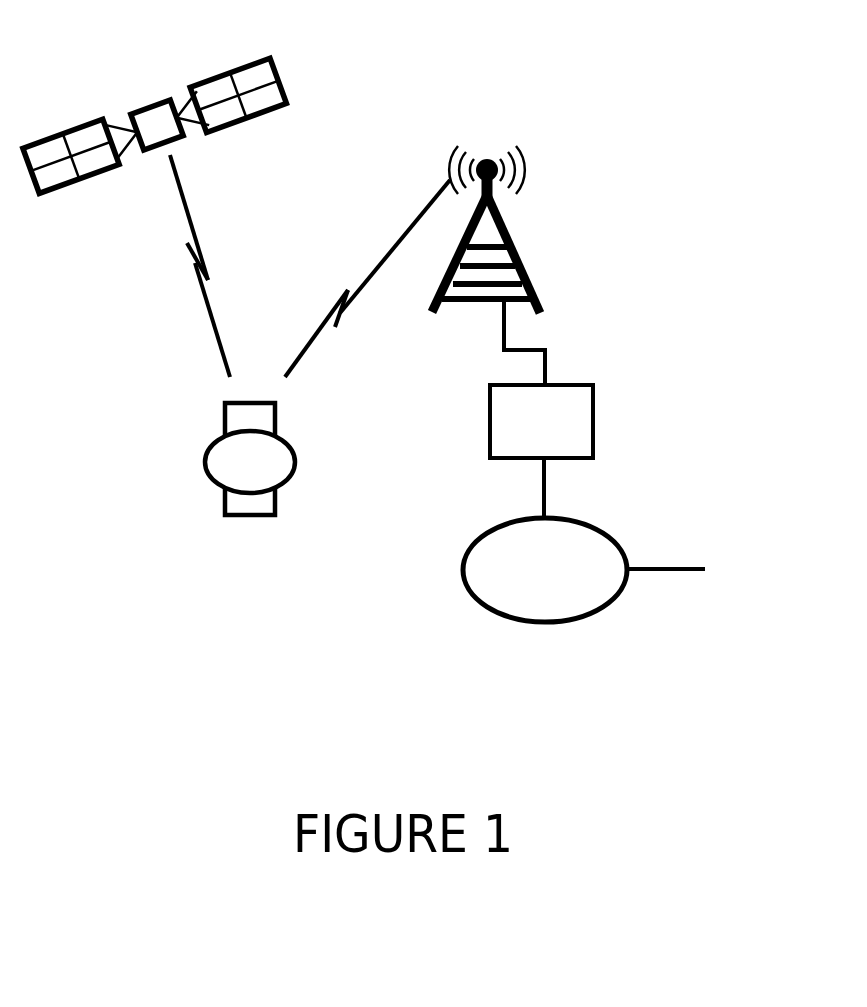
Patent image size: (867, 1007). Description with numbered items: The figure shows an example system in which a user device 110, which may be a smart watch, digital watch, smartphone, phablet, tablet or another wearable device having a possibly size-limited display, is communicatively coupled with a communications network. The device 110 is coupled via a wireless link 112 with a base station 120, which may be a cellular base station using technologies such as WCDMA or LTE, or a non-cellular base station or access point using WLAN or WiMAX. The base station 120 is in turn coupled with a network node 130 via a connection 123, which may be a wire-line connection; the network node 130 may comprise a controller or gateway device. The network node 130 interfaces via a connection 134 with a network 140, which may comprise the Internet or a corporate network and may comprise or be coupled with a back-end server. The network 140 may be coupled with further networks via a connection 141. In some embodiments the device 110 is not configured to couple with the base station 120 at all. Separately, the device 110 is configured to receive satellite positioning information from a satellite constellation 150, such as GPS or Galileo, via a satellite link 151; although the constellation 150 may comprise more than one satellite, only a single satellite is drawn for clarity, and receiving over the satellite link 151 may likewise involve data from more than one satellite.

The device 110 is at (223, 490).
The wireless link 112 is at (333, 300).
The base station 120 is at (520, 265).
The connection 123 is at (547, 352).
The network node 130 is at (565, 435).
The connection 134 is at (545, 490).
The network 140 is at (573, 583).
The connection 141 is at (657, 570).
The satellite constellation 150 is at (157, 97).
The satellite link 151 is at (207, 250).